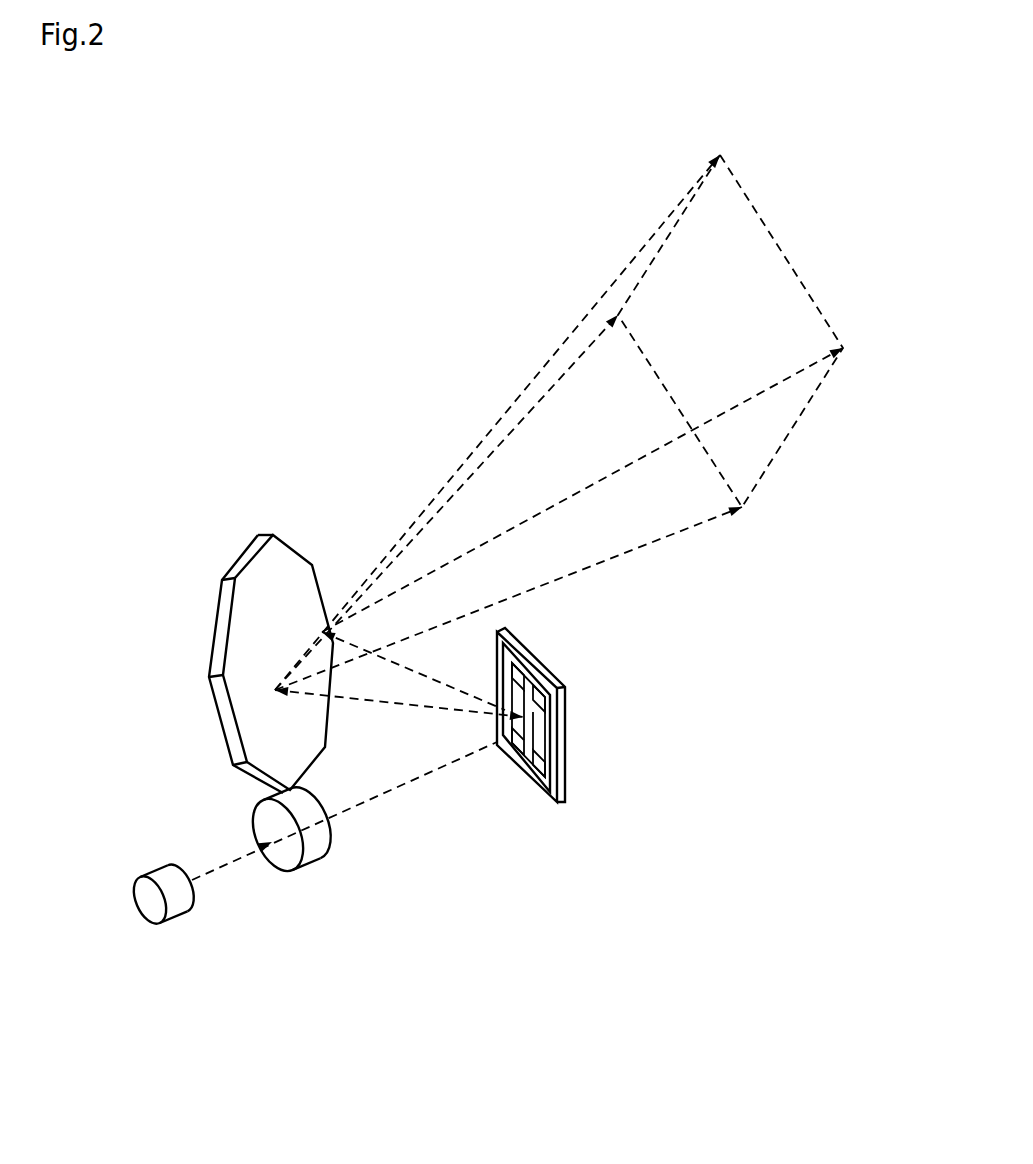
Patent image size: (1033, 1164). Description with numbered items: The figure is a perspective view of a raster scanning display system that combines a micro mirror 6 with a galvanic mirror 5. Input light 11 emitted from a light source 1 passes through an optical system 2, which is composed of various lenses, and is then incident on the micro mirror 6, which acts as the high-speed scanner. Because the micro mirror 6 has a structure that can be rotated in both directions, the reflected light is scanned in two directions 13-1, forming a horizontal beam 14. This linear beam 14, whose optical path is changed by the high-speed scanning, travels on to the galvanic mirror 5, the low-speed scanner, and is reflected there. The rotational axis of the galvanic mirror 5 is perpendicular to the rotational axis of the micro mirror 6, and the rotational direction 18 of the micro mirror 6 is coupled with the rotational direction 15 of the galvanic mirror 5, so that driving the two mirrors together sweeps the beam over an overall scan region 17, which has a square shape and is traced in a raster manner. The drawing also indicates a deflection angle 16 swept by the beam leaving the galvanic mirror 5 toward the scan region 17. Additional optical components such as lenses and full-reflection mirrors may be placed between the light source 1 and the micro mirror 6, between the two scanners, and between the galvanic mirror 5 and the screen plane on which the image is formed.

The light source 1 is at (177, 908).
The optical system 2 is at (310, 845).
The galvanic mirror 5 is at (250, 608).
The micro mirror 6 is at (547, 670).
The input light 11 is at (227, 862).
The two directions 13-1 is at (446, 724).
The horizontal beam 14 is at (417, 693).
The rotational direction of the galvanic mirror 15 is at (273, 549).
The scanning deflection angle 16 is at (353, 601).
The overall scan region 17 is at (782, 280).
The rotational direction of the micro mirror 18 is at (510, 723).